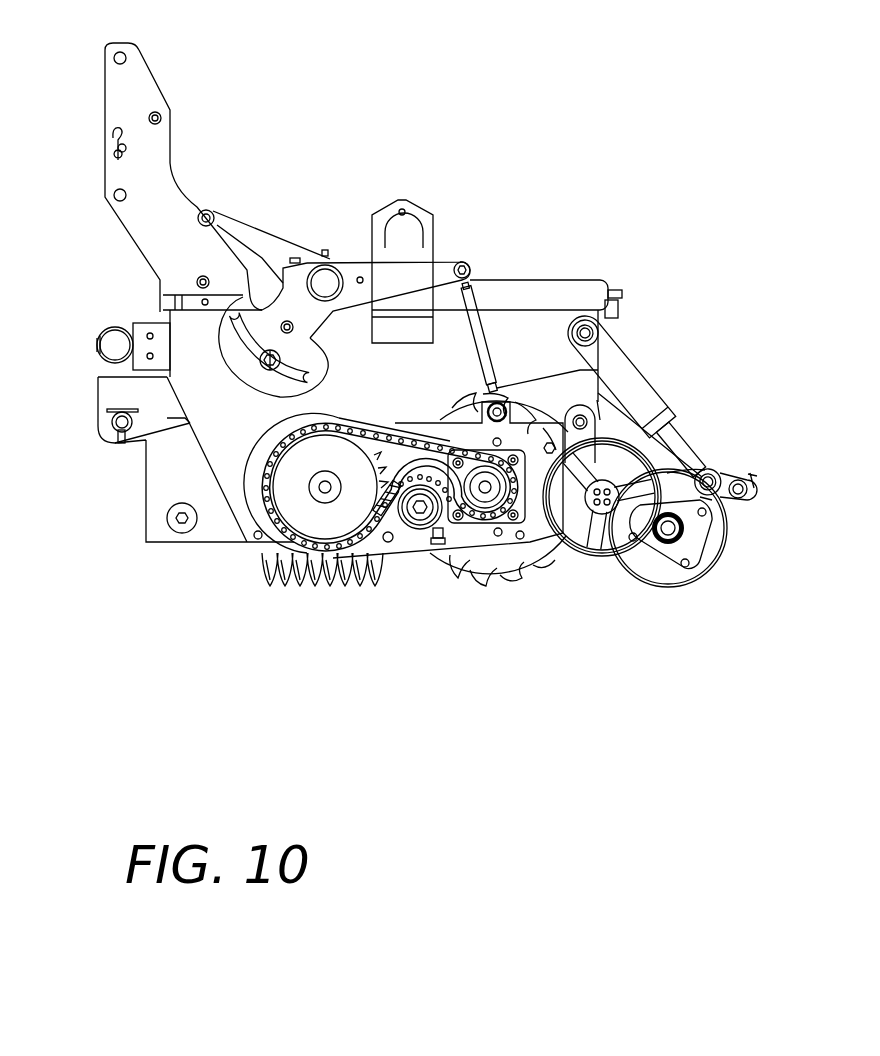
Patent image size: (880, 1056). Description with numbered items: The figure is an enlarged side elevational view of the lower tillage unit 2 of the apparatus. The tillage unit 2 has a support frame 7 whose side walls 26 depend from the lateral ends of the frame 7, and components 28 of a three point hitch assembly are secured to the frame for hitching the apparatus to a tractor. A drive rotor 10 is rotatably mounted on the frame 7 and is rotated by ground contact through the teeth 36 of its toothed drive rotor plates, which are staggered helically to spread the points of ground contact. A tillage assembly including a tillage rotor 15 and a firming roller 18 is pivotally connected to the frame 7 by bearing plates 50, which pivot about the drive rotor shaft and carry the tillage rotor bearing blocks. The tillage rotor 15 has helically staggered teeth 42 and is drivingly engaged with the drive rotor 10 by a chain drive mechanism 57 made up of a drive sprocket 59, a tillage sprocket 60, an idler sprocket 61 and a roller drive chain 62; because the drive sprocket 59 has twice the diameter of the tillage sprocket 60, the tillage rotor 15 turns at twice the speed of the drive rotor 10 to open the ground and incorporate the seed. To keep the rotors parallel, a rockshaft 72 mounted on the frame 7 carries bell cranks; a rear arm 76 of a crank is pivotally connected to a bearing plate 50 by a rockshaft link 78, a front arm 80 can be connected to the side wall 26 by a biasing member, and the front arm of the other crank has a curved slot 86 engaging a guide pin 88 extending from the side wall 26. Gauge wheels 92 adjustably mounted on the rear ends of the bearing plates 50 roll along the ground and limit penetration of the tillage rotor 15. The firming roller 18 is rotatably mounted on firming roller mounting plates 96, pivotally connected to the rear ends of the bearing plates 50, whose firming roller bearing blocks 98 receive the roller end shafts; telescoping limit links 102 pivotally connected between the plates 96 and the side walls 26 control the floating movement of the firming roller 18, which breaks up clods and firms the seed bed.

The tillage unit 2 is at (339, 80).
The support frame 7 is at (213, 443).
The drive rotor 10 is at (292, 573).
The tillage rotor 15 is at (463, 586).
The firming roller 18 is at (683, 589).
The side wall 26 is at (240, 512).
The component of a three point hitch assembly 28 is at (113, 80).
The teeth of the drive rotor plates 36 is at (319, 584).
The teeth of the tillage rotor plates 42 is at (512, 520).
The bearing plate 50 is at (368, 548).
The drive mechanism 57 is at (253, 477).
The drive sprocket 59 is at (292, 500).
The tillage sprocket 60 is at (494, 494).
The idler sprocket 61 is at (418, 521).
The roller drive chain 62 is at (380, 436).
The rockshaft 72 is at (327, 276).
The rear arm 76 is at (442, 265).
The rockshaft link 78 is at (474, 300).
The front arm 80 is at (303, 350).
The curved slot 86 is at (243, 346).
The guide pin 88 is at (263, 371).
The gauge wheel 92 is at (603, 555).
The firming roller mounting plate 96 is at (712, 502).
The firming roller bearing block 98 is at (690, 535).
The telescoping limit link 102 is at (637, 386).